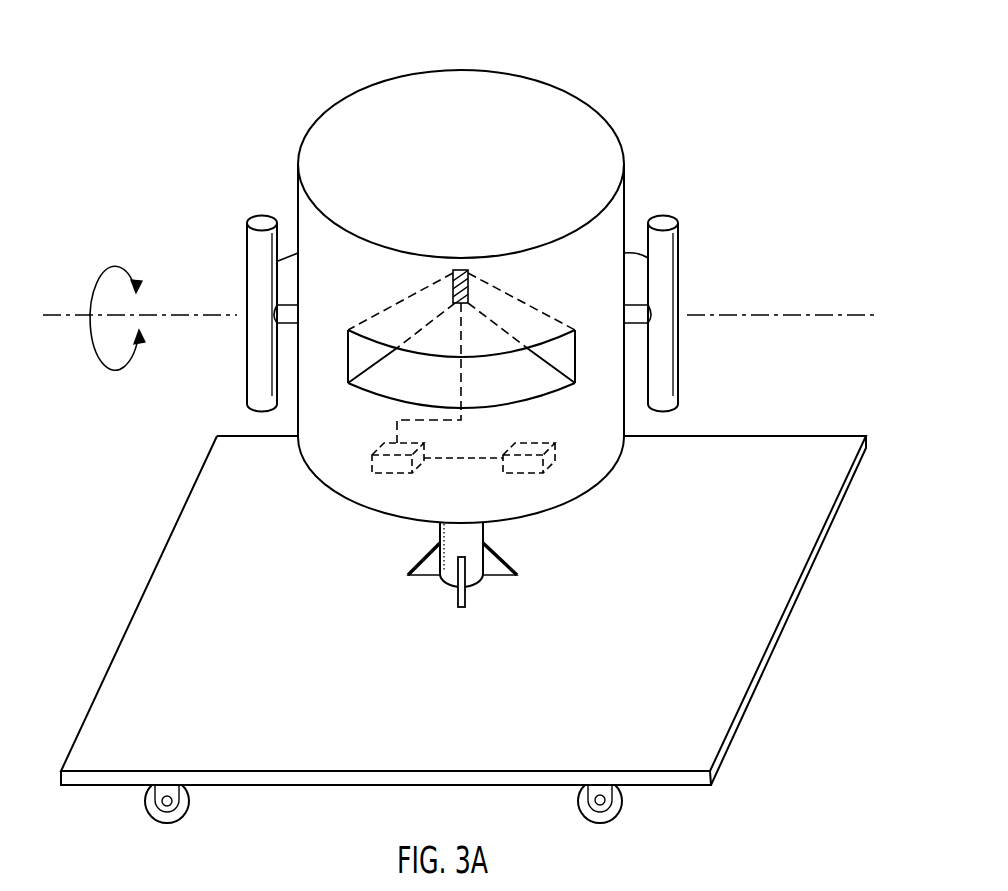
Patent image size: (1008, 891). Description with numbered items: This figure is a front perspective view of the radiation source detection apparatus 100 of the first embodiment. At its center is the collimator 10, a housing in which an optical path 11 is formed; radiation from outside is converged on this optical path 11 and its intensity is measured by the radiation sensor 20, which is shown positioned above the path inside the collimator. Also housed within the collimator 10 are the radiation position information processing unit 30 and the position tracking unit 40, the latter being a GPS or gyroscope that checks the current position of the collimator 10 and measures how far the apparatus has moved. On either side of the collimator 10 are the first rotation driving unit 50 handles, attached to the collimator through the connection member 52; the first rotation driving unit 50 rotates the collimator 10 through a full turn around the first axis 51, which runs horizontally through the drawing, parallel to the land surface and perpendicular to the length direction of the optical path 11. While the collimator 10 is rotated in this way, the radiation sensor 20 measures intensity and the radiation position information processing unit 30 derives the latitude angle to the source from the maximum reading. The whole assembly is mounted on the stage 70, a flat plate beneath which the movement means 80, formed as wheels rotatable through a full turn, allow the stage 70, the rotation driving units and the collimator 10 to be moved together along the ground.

The radiation source detection apparatus 100 is at (597, 82).
The collimator 10 is at (345, 106).
The optical path 11 is at (533, 382).
The radiation sensor 20 is at (461, 270).
The radiation position information processing unit 30 is at (373, 460).
The position tracking unit 40 is at (552, 462).
The first rotation driving unit 50 is at (280, 312).
The first axis 51 is at (829, 313).
The connection member 52 is at (291, 262).
The stage 70 is at (733, 663).
The movement means 80 is at (184, 816).